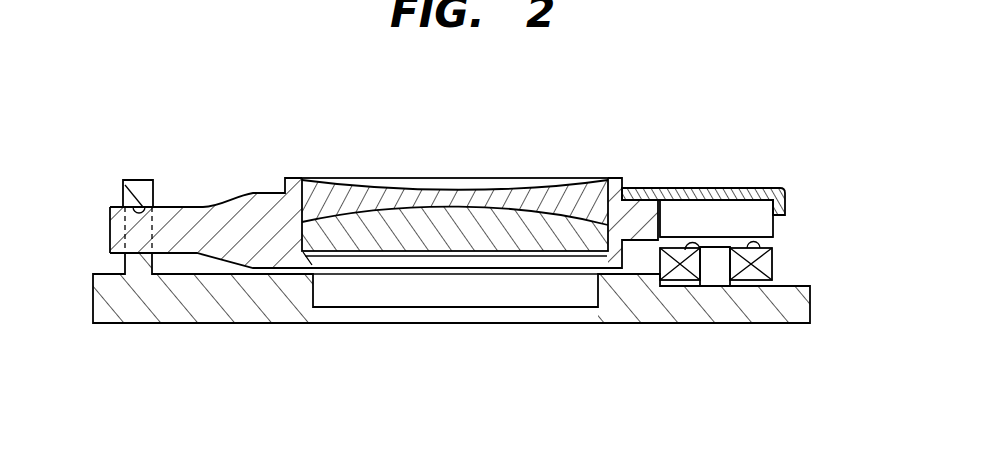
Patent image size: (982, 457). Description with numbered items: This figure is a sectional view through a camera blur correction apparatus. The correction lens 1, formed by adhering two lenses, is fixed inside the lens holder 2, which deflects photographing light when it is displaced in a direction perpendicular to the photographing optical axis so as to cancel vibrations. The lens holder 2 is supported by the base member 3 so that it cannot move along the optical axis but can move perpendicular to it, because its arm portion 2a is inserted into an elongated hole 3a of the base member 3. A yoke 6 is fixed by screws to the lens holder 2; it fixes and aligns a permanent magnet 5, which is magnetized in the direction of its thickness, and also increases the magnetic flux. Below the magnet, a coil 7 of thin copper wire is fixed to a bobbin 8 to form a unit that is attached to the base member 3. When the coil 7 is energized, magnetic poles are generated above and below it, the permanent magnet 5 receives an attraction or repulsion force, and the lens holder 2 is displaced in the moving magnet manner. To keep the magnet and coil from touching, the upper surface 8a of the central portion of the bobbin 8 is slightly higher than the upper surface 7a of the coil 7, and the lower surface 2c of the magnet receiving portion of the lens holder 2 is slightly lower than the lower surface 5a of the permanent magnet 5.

The correction lens 1 is at (483, 208).
The lens holder 2 is at (349, 257).
The arm portion 2a is at (110, 235).
The lower surface of magnet receiving portion 2c is at (655, 202).
The base member 3 is at (451, 247).
The elongated hole 3a is at (147, 180).
The permanent magnet 5 is at (769, 206).
The lower surface of permanent magnet 5a is at (765, 241).
The yoke 6 is at (717, 188).
The coil 7 is at (754, 315).
The upper surface of coil 7a is at (760, 248).
The bobbin 8 is at (682, 321).
The upper surface of central portion of bobbin 8a is at (685, 250).